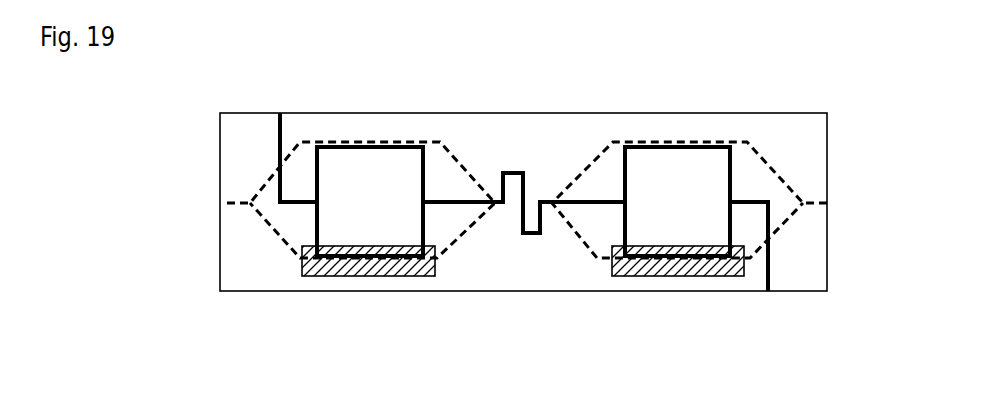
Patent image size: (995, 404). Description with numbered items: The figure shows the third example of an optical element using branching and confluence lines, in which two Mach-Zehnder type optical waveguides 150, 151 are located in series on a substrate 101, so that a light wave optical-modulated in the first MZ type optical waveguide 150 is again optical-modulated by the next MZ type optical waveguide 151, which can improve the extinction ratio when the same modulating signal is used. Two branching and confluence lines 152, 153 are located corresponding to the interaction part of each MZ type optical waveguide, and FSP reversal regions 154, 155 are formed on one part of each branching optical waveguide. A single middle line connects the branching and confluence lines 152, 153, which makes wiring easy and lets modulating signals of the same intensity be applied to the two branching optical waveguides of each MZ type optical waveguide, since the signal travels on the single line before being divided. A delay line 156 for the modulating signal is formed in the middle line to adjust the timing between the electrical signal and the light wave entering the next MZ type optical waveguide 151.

The substrate 101 is at (797, 267).
The MZ type optical waveguide 150 is at (292, 248).
The MZ type optical waveguide 151 is at (595, 248).
The branching and confluence line 152 is at (398, 145).
The branching and confluence line 153 is at (695, 147).
The FSP reversal region 154 is at (390, 277).
The FSP reversal region 155 is at (700, 277).
The delay line 156 is at (518, 173).